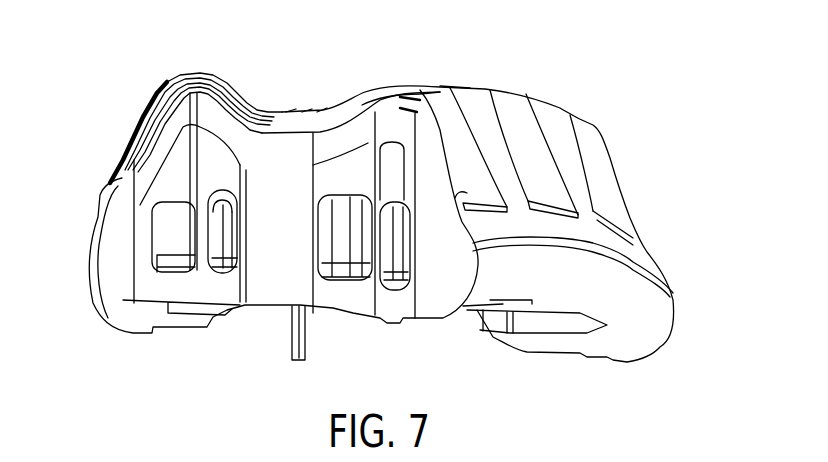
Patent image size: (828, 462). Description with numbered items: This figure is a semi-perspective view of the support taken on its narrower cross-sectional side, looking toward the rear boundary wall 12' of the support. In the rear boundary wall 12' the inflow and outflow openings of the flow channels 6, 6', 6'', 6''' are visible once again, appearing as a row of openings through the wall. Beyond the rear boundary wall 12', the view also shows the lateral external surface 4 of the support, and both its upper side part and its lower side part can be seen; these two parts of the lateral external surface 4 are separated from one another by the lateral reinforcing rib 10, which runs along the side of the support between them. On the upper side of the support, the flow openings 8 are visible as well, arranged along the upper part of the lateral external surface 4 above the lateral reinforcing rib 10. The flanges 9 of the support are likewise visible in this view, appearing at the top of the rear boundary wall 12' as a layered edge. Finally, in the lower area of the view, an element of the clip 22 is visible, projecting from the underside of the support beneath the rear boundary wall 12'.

The flanges 9 is at (203, 72).
The rear boundary wall 12' is at (269, 194).
The flow channel 6''' is at (173, 290).
The flow channel 6'' is at (233, 275).
The flow channel 6' is at (349, 280).
The flow channel 6 is at (398, 285).
The lateral external surface 4 is at (577, 232).
The flow openings 8 is at (617, 210).
The lateral reinforcing rib 10 is at (667, 283).
The clip 22 is at (297, 361).